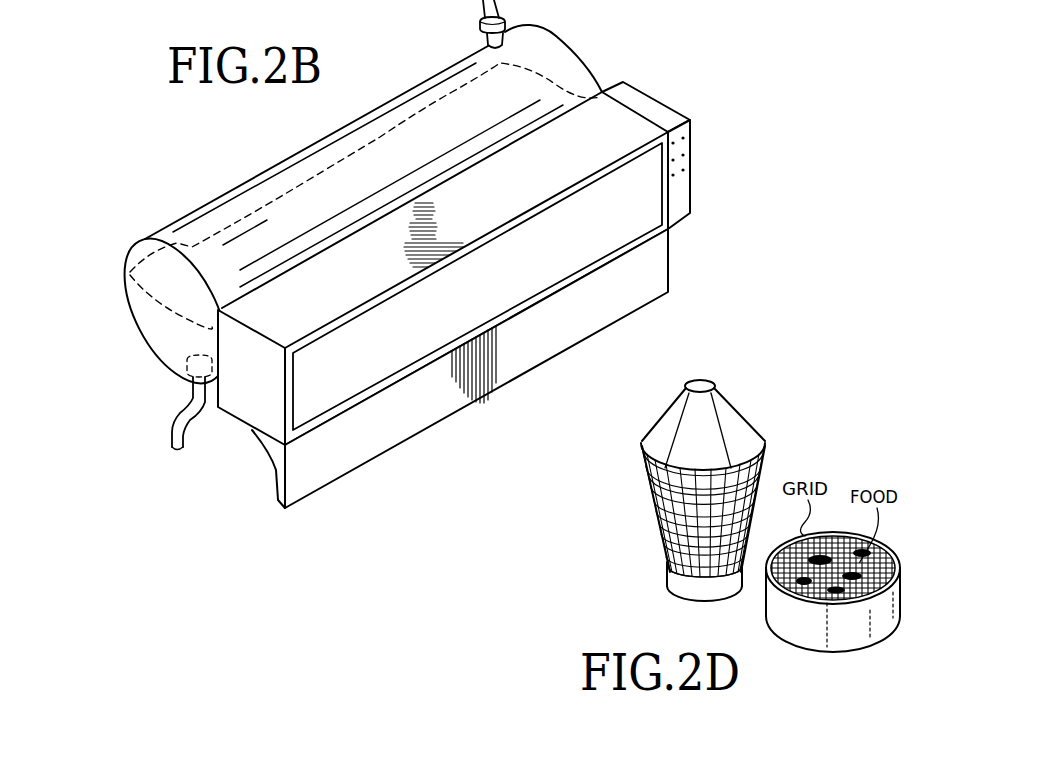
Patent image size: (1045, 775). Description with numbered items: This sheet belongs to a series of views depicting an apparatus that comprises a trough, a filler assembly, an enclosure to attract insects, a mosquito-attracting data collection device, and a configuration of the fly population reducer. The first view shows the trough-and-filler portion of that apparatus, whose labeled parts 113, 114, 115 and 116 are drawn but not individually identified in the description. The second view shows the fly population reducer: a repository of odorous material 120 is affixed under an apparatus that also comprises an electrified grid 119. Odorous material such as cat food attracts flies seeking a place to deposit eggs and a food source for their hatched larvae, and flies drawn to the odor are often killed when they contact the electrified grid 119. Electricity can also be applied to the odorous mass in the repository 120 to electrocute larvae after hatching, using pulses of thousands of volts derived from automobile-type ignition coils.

In FIG. 2B, the drain hose 113 is at (192, 398).
In FIG. 2B, the inlet fitting 114 is at (480, 23).
In FIG. 2B, the container box 115 is at (650, 205).
In FIG. 2B, the cylindrical bag 116 is at (438, 79).
In FIG. 2D, the electrified grid 119 is at (652, 500).
In FIG. 2D, the repository of odorous material 120 is at (663, 572).